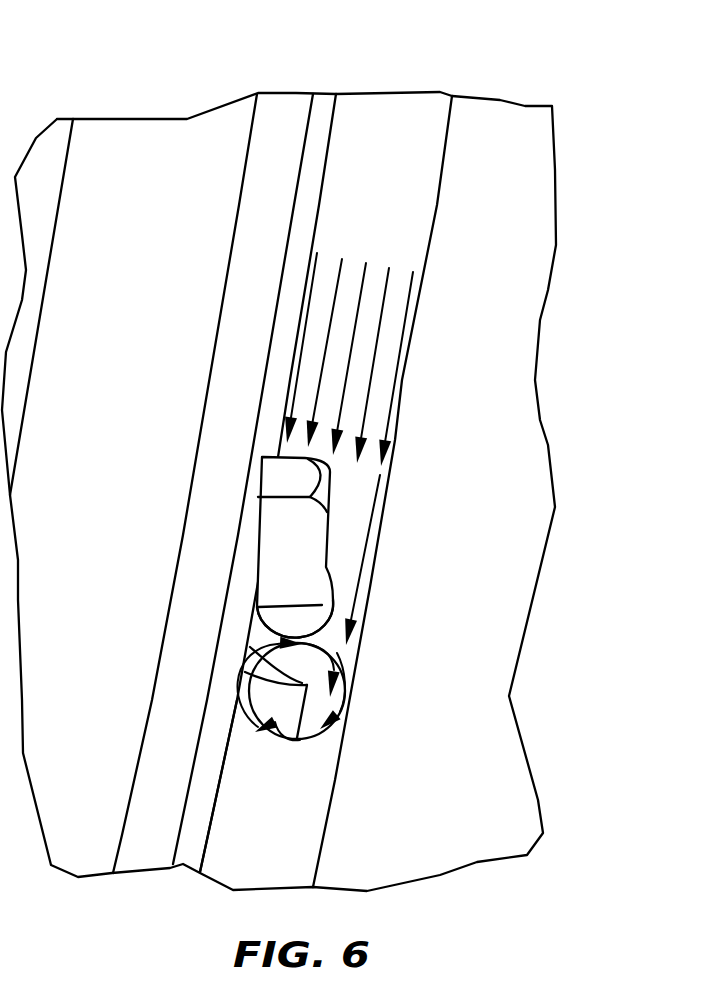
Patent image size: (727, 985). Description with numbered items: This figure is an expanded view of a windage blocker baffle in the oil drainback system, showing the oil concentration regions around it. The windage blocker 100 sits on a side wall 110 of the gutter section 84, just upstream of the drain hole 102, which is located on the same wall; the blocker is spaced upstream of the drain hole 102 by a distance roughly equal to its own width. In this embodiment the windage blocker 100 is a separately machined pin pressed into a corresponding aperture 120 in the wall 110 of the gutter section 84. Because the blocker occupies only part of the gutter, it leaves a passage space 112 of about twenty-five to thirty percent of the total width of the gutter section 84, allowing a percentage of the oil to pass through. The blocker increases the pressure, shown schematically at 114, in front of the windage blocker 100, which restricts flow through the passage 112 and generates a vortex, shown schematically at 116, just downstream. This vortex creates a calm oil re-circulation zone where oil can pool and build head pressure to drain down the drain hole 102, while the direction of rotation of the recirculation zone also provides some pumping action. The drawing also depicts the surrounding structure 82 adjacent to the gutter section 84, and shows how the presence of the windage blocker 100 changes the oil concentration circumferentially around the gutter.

The housing wall 82 is at (508, 501).
The gutter section 84 is at (293, 821).
The windage blocker 100 is at (268, 543).
The drain hole 102 is at (292, 707).
The side wall 110 is at (320, 119).
The passage space 112 is at (352, 538).
The pressure 114 is at (352, 337).
The vortex 116 is at (307, 737).
The aperture 120 is at (278, 622).